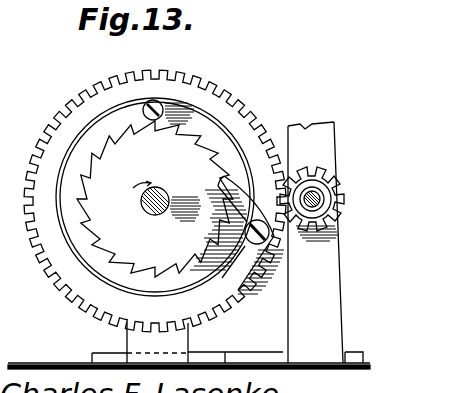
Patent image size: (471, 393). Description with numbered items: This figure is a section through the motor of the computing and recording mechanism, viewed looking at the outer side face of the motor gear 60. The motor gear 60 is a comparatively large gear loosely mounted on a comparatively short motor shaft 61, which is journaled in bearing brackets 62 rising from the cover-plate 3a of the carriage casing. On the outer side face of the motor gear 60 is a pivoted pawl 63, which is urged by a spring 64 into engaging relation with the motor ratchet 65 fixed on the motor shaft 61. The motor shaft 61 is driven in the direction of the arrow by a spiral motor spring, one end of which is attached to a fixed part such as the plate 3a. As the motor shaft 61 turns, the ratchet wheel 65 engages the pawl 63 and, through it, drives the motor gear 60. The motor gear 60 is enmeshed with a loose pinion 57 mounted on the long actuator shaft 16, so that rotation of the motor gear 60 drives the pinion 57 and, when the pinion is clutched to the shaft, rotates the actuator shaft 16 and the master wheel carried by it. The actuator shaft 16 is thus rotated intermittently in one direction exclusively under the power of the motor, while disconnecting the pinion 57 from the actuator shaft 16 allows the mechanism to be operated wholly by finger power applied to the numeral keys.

The cover-plate 3a is at (189, 355).
The actuator shaft 16 is at (330, 223).
The pinion 57 is at (331, 181).
The motor gear 60 is at (155, 201).
The motor shaft 61 is at (157, 190).
The bearing brackets 62 is at (135, 346).
The pawl 63 is at (247, 198).
The spring 64 is at (166, 296).
The motor ratchet 65 is at (195, 185).